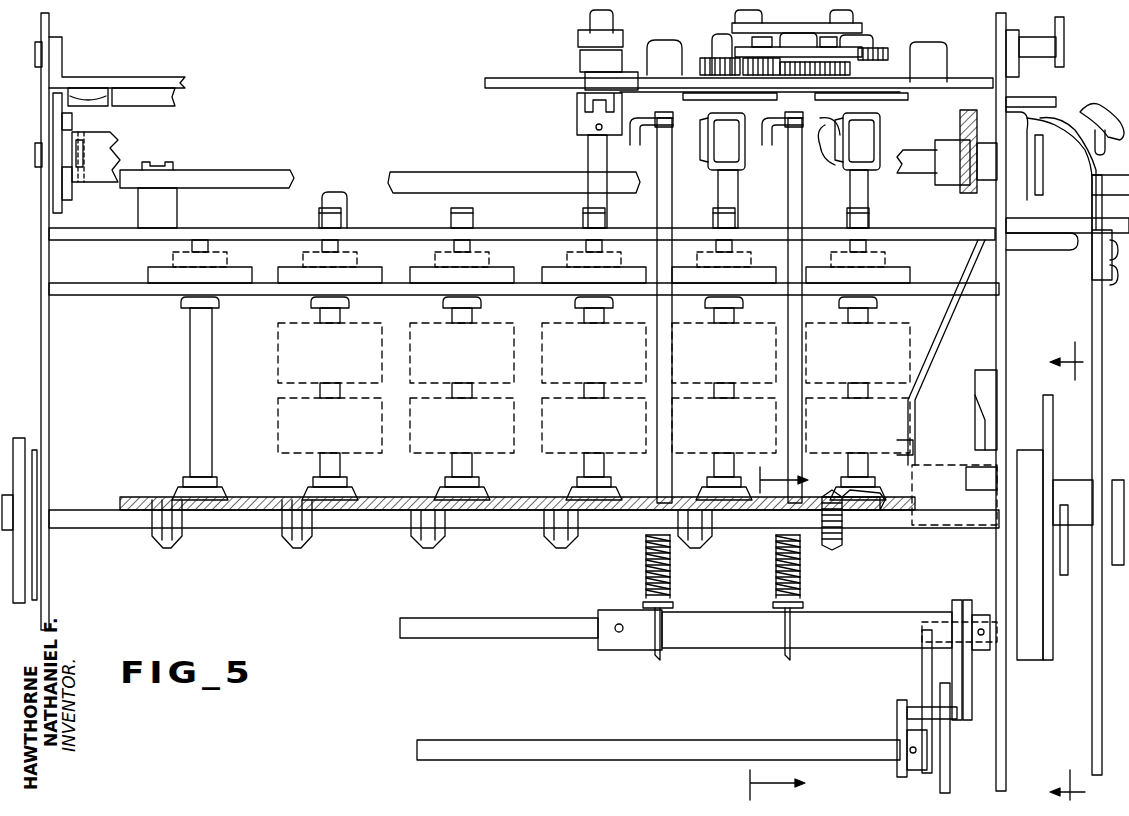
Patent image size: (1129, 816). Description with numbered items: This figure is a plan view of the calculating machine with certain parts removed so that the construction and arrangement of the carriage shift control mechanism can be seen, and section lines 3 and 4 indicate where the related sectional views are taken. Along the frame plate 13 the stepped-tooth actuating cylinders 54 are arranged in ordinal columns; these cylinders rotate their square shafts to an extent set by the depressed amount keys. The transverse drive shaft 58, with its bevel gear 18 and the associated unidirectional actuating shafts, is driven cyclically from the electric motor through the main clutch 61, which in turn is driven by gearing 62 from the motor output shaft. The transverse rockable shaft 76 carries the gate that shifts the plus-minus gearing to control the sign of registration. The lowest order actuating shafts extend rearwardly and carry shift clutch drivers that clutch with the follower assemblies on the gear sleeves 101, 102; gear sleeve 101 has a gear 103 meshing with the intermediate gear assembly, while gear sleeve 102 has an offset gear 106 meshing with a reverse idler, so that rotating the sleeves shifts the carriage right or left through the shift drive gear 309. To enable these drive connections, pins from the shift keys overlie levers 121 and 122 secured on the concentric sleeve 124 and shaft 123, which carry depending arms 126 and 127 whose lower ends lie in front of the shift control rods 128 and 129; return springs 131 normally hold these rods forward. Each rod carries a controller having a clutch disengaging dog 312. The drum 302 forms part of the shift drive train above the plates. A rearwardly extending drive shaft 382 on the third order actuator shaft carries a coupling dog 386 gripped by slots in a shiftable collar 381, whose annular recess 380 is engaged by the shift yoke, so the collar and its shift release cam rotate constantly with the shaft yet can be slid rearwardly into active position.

The frame plate 13 is at (1003, 699).
The bevel gear 18 is at (903, 522).
The actuating cylinders 54 is at (282, 416).
The transverse drive shaft 58 is at (463, 525).
The main clutch 61 is at (1032, 447).
The gearing 62 is at (1046, 396).
The transverse rockable shaft 76 is at (922, 165).
The gear sleeve 101 is at (722, 38).
The gear sleeve 102 is at (852, 42).
The gear 103 is at (694, 58).
The gear 106 is at (888, 55).
The lever 121 is at (955, 675).
The lever 122 is at (965, 722).
The shaft 123 is at (483, 630).
The sleeve 124 is at (855, 628).
The depending arm 126 is at (660, 660).
The depending arm 127 is at (788, 660).
The shift control rod 128 is at (660, 207).
The shift control rod 129 is at (796, 190).
The return springs 131 is at (785, 575).
The drum 302 is at (830, 44).
The shift drive gear 309 is at (800, 70).
The clutch disengaging dog 312 is at (824, 150).
The annular recess 380 is at (592, 40).
The shiftable collar 381 is at (590, 60).
The drive shaft 382 is at (596, 148).
The coupling dog 386 is at (572, 108).
The section line 3- 3 is at (1056, 572).
The section line 4- 4 is at (789, 633).